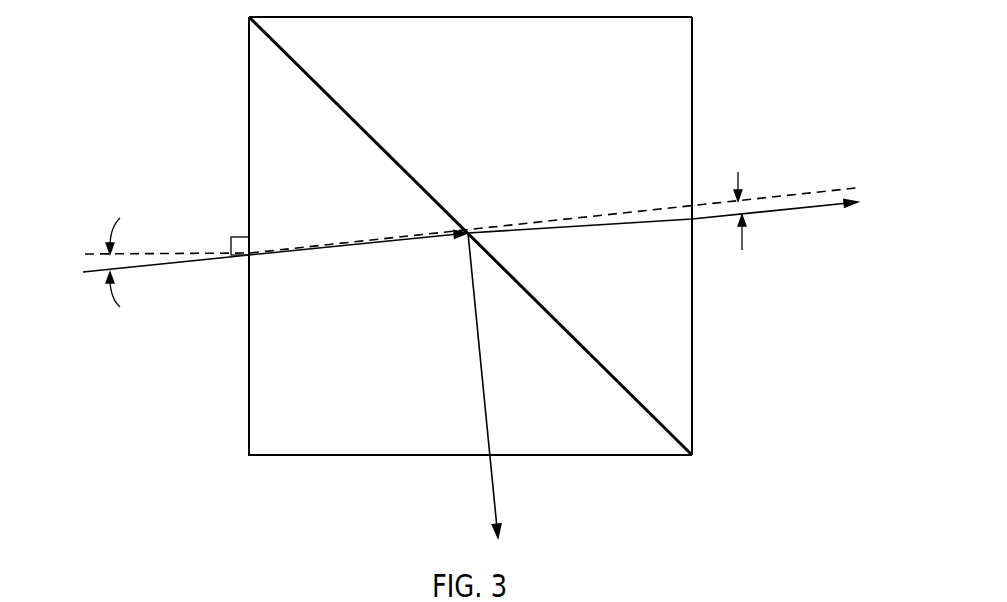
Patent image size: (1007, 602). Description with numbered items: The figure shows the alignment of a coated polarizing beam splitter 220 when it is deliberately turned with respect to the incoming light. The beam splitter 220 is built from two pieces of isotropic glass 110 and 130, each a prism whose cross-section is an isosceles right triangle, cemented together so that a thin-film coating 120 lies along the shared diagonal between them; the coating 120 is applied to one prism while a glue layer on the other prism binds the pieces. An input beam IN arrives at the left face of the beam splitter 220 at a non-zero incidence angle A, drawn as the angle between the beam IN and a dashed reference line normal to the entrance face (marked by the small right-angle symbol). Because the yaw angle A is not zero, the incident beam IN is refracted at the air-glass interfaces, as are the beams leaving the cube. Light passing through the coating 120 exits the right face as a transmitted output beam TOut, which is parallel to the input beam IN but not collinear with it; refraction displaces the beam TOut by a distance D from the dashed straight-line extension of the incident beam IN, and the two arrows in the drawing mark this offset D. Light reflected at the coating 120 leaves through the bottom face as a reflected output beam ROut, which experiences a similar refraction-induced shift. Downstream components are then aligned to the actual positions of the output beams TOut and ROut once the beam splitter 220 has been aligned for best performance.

The isotropic glass piece 110 is at (320, 412).
The isotropic glass piece 130 is at (626, 76).
The thin-film coating 120 is at (342, 101).
The coated polarizing beam splitter 220 is at (693, 52).
The input beam IN is at (95, 273).
The transmitted output beam TOut is at (828, 208).
The reflected output beam ROut is at (488, 475).
The incidence angle A is at (125, 270).
The shift distance D is at (742, 224).